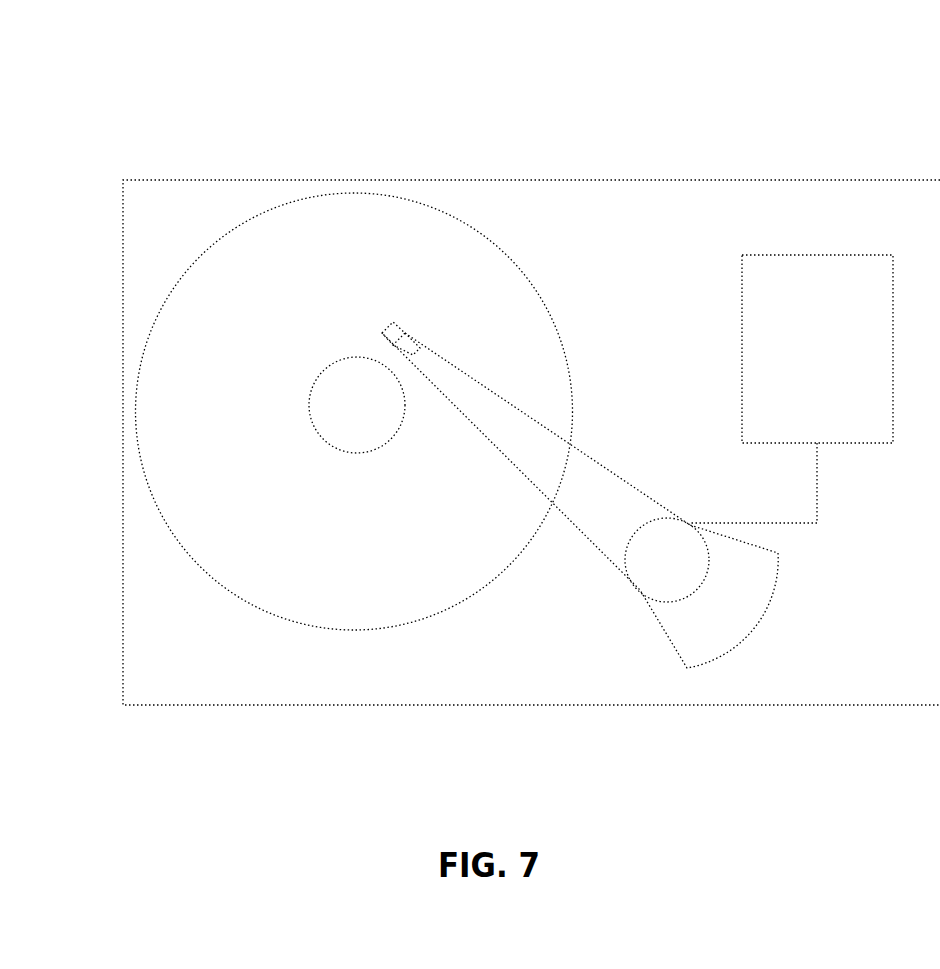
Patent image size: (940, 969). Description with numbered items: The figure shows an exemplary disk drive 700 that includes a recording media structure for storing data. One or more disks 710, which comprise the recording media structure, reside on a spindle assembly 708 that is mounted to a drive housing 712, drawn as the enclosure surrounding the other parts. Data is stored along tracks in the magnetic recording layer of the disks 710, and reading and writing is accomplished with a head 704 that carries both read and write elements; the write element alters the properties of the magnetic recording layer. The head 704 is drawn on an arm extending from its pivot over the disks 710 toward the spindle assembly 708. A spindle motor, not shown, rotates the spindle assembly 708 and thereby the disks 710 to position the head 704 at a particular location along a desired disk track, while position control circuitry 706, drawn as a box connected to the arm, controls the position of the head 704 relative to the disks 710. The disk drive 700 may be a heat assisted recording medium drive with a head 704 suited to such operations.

The disk drive 700 is at (548, 58).
The head 704 is at (417, 336).
The position control circuitry 706 is at (838, 360).
The spindle assembly 708 is at (378, 415).
The disks 710 is at (265, 610).
The drive housing 712 is at (200, 705).